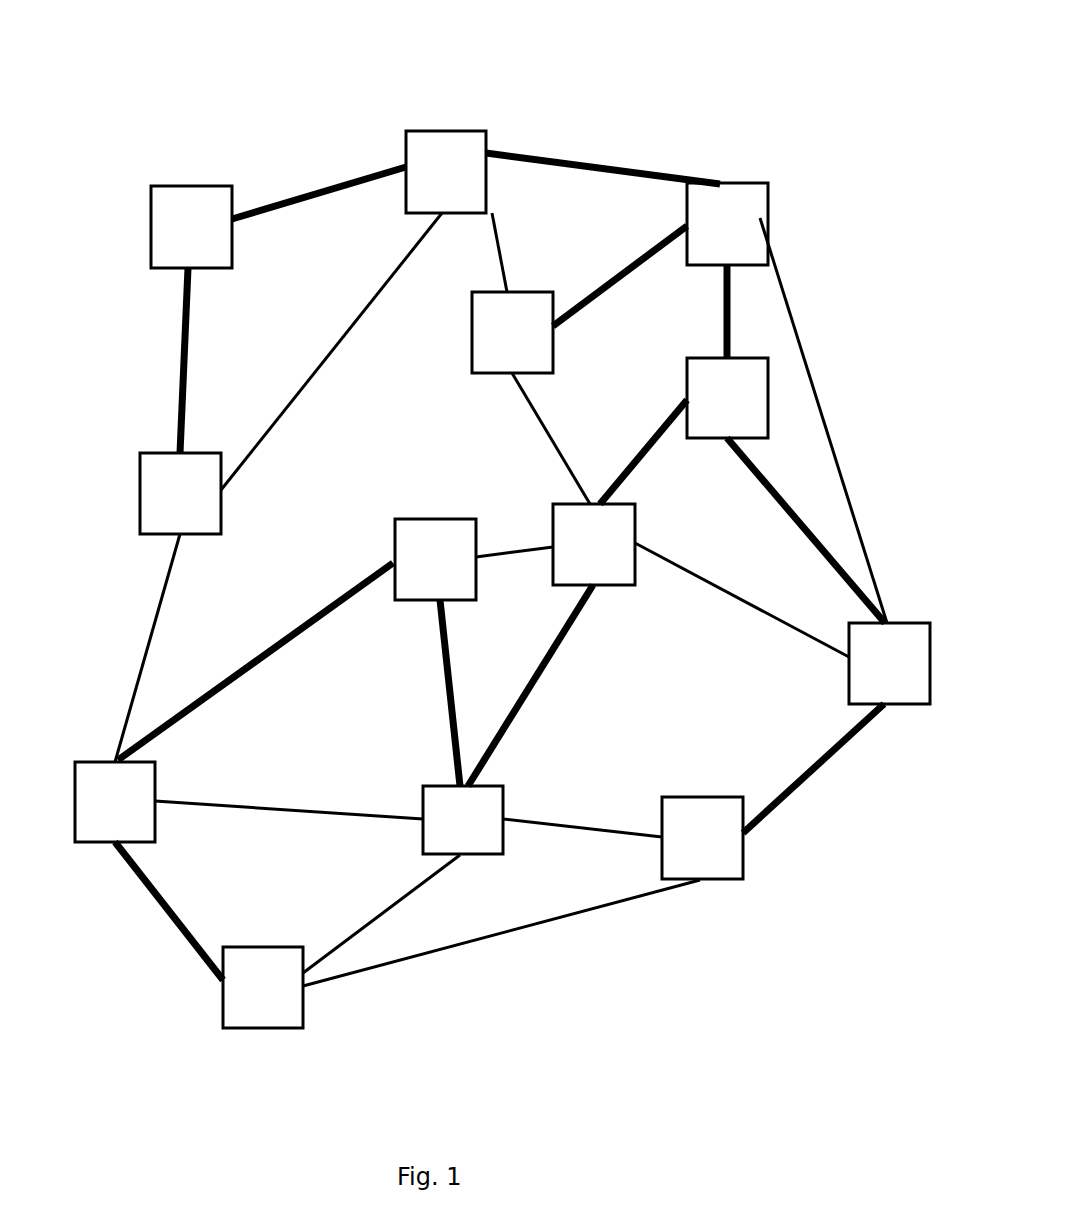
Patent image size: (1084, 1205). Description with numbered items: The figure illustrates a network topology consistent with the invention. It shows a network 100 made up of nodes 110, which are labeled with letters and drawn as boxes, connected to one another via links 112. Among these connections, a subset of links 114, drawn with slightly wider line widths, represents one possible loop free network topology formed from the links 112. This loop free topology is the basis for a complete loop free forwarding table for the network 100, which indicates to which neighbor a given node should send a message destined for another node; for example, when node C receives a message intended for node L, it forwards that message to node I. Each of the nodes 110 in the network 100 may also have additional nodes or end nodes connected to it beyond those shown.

The network 100 is at (123, 73).
The nodes 110 is at (480, 128).
The links 112 is at (386, 166).
The loop free topology links 114 is at (328, 221).